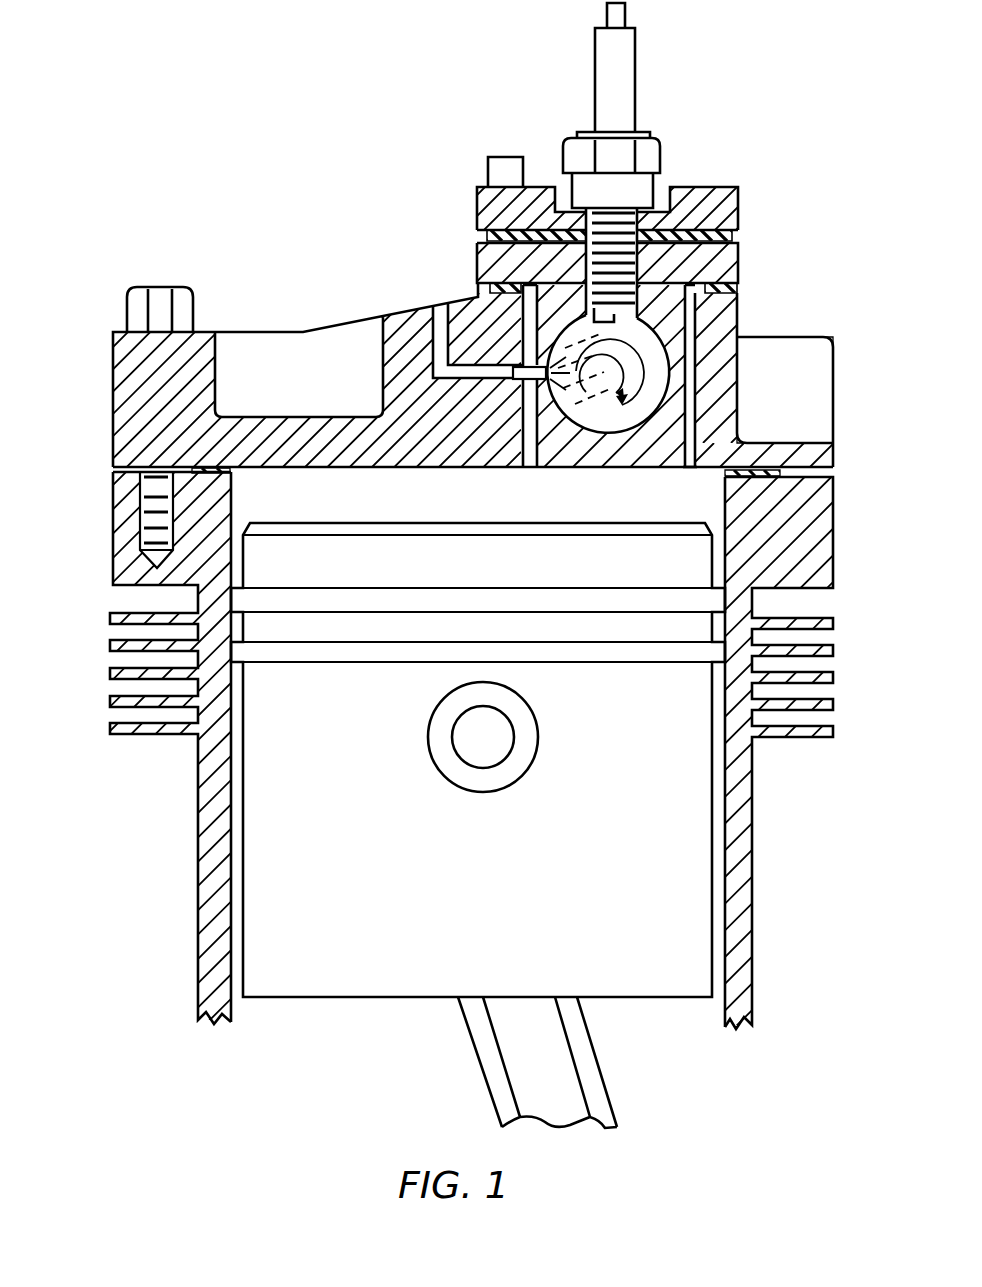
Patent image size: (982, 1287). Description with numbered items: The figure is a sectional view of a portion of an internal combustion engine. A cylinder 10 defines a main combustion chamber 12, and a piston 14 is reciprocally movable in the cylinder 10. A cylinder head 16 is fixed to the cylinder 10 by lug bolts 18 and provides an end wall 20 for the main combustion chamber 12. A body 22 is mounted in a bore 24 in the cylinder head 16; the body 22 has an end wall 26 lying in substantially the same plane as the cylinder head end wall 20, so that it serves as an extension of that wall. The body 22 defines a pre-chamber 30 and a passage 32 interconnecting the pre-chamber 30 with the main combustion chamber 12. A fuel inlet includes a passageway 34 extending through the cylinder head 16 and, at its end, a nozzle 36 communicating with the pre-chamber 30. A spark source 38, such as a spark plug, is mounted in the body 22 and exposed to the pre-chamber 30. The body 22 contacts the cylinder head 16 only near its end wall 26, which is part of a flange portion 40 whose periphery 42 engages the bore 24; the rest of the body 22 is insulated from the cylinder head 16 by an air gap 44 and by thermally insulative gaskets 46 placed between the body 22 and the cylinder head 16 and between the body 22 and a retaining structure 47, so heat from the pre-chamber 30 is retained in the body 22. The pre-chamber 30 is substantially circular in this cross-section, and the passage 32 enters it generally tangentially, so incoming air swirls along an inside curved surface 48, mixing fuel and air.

The cylinder 10 is at (197, 800).
The main combustion chamber 12 is at (243, 507).
The piston 14 is at (695, 815).
The cylinder head 16 is at (120, 380).
The lug bolts 18 is at (127, 310).
The end wall 20 is at (318, 468).
The body 22 is at (740, 263).
The bore 24 is at (523, 440).
The end wall 26 is at (618, 423).
The pre-chamber 30 is at (660, 368).
The passage 32 is at (648, 440).
The passageway 34 is at (440, 303).
The nozzle 36 is at (517, 380).
The spark source 38 is at (636, 70).
The flange portion 40 is at (688, 462).
The periphery 42 is at (800, 452).
The air gap 44 is at (690, 383).
The gaskets 46 is at (488, 238).
The retaining structure 47 is at (712, 187).
The inside curved surface 48 is at (492, 289).